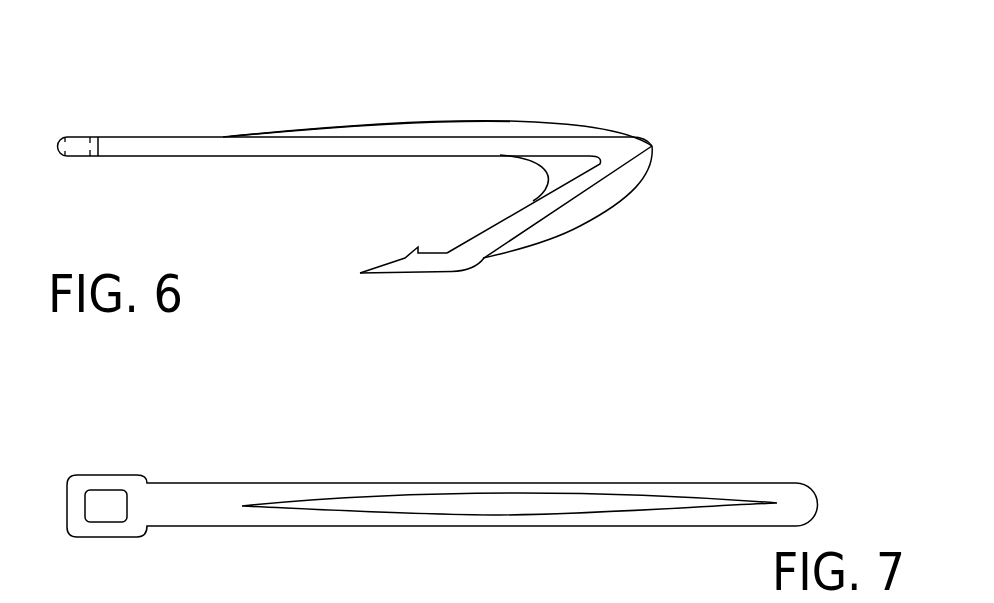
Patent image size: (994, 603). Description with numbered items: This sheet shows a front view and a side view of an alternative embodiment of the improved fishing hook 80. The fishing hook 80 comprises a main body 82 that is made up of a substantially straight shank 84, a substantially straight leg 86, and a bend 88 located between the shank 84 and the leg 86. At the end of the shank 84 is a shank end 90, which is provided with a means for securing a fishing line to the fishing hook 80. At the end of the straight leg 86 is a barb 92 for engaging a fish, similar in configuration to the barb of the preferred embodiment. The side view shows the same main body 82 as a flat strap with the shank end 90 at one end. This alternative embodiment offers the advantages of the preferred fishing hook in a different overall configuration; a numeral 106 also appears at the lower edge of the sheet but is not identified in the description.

In FIG. 6, the fishing hook 80 is at (240, 50).
In FIG. 6, the main body 82 is at (125, 137).
In FIG. 7, the main body 82 is at (207, 483).
In FIG. 6, the shank 84 is at (193, 143).
In FIG. 6, the leg 86 is at (517, 220).
In FIG. 6, the bend 88 is at (623, 150).
In FIG. 6, the shank end 90 is at (59, 146).
In FIG. 6, the barb 92 is at (405, 257).
In FIG. 7, the reference numeral (partially visible) 106 is at (399, 592).